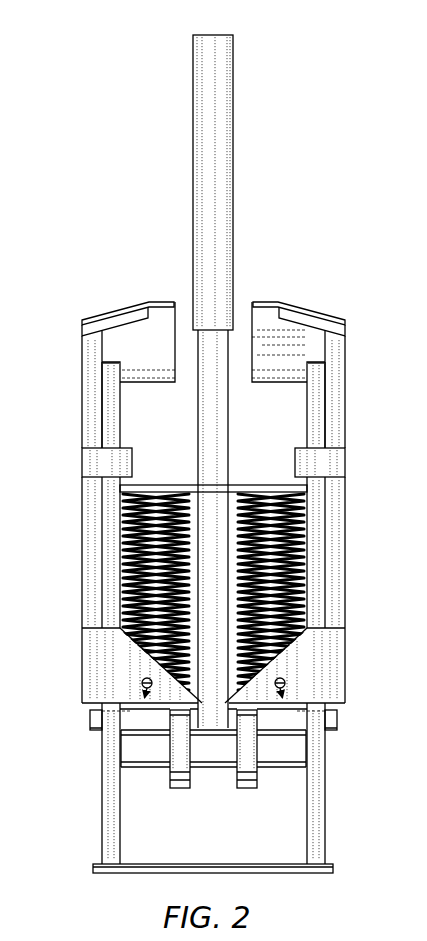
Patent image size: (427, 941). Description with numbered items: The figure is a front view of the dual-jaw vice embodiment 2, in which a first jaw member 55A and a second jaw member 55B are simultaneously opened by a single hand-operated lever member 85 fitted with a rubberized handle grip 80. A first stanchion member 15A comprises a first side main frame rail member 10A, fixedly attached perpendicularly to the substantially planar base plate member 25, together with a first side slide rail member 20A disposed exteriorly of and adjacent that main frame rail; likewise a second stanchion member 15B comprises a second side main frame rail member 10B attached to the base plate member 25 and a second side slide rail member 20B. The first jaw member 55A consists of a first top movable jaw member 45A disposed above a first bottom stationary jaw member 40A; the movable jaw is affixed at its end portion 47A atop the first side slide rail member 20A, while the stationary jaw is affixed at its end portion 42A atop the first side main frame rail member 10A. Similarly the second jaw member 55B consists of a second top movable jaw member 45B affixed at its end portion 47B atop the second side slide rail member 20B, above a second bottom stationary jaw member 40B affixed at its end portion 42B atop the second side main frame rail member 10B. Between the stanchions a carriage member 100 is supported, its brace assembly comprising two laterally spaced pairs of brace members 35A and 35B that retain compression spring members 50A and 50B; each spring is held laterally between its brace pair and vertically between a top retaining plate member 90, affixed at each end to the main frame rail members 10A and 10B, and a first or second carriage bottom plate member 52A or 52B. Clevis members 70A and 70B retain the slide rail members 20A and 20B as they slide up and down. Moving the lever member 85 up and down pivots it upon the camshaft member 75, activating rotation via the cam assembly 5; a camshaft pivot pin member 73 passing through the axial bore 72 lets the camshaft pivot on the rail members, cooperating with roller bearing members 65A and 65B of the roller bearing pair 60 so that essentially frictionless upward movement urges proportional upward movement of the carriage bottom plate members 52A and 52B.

The dual-jaw vice embodiment 2 is at (129, 231).
The cam assembly 5 is at (298, 781).
The first side main frame rail member 10A is at (105, 835).
The second side main frame rail member 10B is at (320, 813).
The first stanchion member 15A is at (90, 555).
The second stanchion member 15B is at (350, 540).
The first side slide rail member 20A is at (102, 598).
The second side slide rail member 20B is at (325, 598).
The base plate member 25 is at (275, 868).
The first pair of brace members 35A is at (95, 685).
The second pair of brace members 35B is at (332, 685).
The first bottom stationary jaw member 40A is at (108, 352).
The second bottom stationary jaw member 40B is at (313, 349).
The end portion of first bottom stationary jaw member 42A is at (110, 366).
The end portion of second bottom stationary jaw member 42B is at (318, 367).
The first top movable jaw member 45A is at (120, 311).
The second top movable jaw member 45B is at (302, 312).
The end portion of first top movable jaw member 47A is at (92, 343).
The end portion of second top movable jaw member 47B is at (333, 348).
The first compression spring member 50A is at (130, 590).
The second compression spring member 50B is at (298, 590).
The first carriage bottom plate member 52A is at (155, 668).
The second carriage bottom plate member 52B is at (272, 668).
The first jaw member 55A is at (150, 291).
The second jaw member 55B is at (268, 291).
The roller bearing pair 60 is at (155, 783).
The first roller bearing member 65A is at (183, 784).
The second roller bearing member 65B is at (244, 784).
The first clevis member 70A is at (97, 463).
The second clevis member 70B is at (338, 458).
The axial bore 72 is at (100, 728).
The camshaft pivot pin member 73 is at (92, 713).
The camshaft member 75 is at (128, 755).
The handle grip 80 is at (203, 152).
The hand-operated lever member 85 is at (205, 410).
The top retaining plate member 90 is at (293, 489).
The carriage member 100 is at (82, 415).